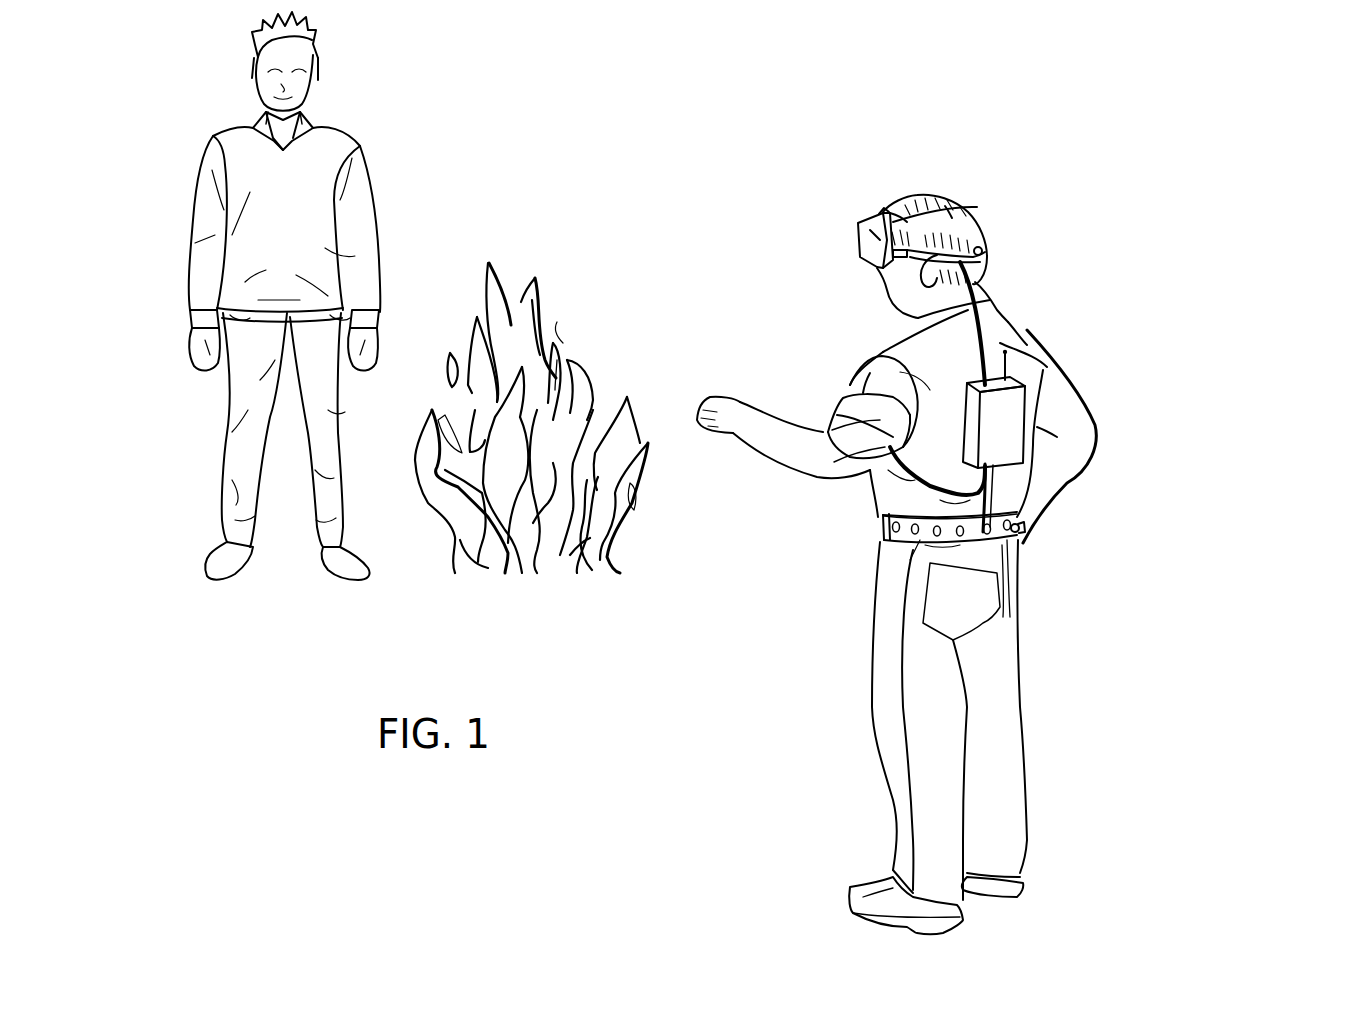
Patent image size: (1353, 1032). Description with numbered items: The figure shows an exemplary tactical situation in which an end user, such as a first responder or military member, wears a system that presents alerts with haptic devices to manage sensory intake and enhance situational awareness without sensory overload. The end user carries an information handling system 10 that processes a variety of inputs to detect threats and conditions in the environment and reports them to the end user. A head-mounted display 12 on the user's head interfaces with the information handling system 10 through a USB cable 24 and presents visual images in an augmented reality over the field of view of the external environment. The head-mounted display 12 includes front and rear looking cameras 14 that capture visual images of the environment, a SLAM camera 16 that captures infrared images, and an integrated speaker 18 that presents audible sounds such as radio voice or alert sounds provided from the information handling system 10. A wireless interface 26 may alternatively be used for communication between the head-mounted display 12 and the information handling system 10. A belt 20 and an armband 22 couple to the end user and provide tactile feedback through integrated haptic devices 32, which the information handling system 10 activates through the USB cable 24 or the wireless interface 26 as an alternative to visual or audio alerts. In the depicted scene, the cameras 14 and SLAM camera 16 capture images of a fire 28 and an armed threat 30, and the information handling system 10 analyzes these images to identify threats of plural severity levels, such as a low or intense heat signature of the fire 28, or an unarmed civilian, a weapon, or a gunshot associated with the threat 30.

The information handling system 10 is at (1003, 443).
The head-mounted display 12 is at (857, 252).
The cameras 14 is at (1033, 211).
The SLAM camera 16 is at (891, 203).
The speaker 18 is at (950, 204).
The belt 20 is at (881, 526).
The armband 22 is at (845, 398).
The USB cable 24 is at (1157, 497).
The wireless interface 26 is at (1040, 362).
The fire 28 is at (506, 264).
The threat 30 is at (228, 132).
The haptic devices 32 is at (1022, 530).